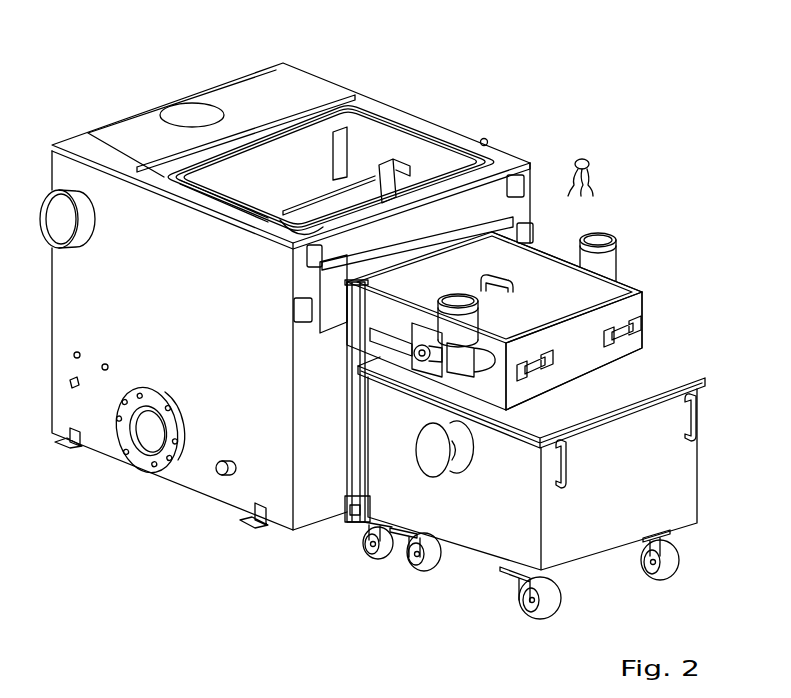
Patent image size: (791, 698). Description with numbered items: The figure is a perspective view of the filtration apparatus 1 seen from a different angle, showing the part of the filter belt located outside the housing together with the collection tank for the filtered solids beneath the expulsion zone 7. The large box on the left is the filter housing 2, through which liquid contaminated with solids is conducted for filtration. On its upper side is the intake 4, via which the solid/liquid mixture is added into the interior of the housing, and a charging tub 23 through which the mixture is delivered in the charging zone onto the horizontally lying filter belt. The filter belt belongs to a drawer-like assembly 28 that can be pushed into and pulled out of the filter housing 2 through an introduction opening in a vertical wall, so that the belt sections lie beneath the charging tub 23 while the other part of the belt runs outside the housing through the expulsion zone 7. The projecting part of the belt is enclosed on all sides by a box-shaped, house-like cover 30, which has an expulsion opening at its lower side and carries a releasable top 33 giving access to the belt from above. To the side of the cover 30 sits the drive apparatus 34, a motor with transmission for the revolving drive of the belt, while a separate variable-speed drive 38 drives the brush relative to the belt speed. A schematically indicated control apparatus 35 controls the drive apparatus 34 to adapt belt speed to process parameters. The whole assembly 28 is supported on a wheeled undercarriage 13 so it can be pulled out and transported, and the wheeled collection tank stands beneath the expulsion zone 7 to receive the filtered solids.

The filtration apparatus 1 is at (385, 80).
The filter housing 2 is at (292, 75).
The intake 4 is at (297, 163).
The expulsion zone 7 is at (620, 387).
The undercarriage 13 is at (372, 559).
The charging tub 23 is at (349, 166).
The drawer-like assembly 28 is at (542, 254).
The cover 30 is at (607, 302).
The top 33 is at (590, 284).
The drive apparatus 34 is at (472, 320).
The control apparatus 35 is at (595, 157).
The drive 38 is at (614, 242).